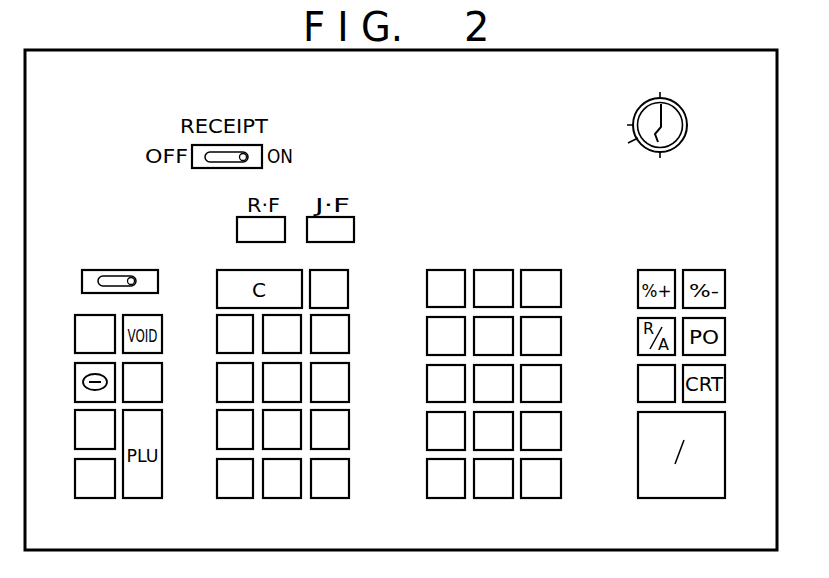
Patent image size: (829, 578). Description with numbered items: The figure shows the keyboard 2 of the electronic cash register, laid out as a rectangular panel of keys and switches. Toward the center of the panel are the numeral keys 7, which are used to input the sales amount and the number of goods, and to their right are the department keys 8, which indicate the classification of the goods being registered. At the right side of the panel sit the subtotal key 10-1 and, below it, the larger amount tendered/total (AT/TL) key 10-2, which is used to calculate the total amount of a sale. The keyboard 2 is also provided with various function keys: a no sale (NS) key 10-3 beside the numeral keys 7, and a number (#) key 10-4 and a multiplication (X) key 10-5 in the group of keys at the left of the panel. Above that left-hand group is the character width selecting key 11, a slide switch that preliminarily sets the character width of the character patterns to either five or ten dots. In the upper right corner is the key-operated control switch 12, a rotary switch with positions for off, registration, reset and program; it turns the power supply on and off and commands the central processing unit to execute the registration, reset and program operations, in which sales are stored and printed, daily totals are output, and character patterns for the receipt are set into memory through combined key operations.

The keyboard 2 is at (662, 46).
The control switch 12 is at (682, 109).
The character width selecting key 11 is at (82, 280).
The department keys 8 is at (500, 268).
The numeral keys 7 is at (277, 500).
The no sale (NS) key 10-3 is at (348, 292).
The multiplication (X) key 10-5 is at (162, 385).
The number (#) key 10-4 is at (76, 432).
The subtotal key 10-1 is at (638, 392).
The amount tendered/total (AT/TL) key 10-2 is at (638, 477).